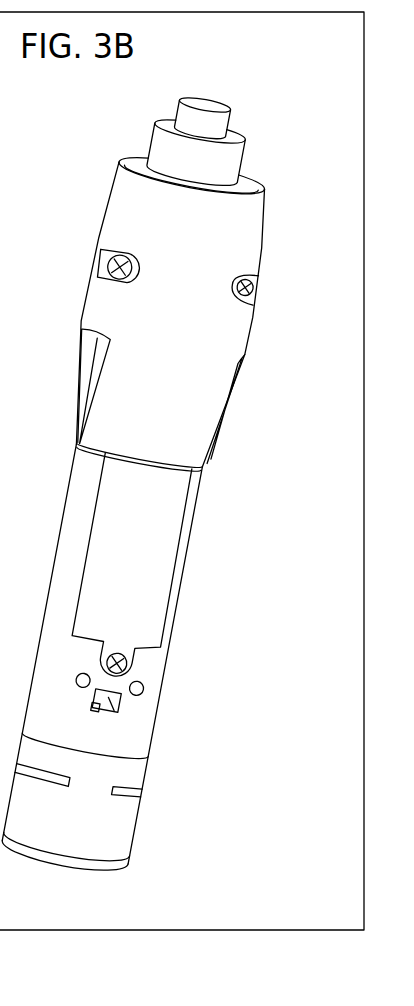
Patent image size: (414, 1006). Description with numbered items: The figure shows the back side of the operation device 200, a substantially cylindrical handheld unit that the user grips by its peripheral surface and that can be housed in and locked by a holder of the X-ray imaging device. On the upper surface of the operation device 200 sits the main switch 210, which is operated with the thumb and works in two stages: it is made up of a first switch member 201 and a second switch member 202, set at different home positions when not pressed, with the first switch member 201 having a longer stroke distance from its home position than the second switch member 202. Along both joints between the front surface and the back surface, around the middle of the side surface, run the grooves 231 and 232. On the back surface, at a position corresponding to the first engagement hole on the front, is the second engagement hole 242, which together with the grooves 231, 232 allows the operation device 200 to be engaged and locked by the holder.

The operation device 200 is at (77, 149).
The first switch member 201 is at (233, 107).
The second switch member 202 is at (247, 157).
The main switch 210 is at (308, 84).
The groove 231 is at (84, 366).
The groove 232 is at (234, 384).
The second engagement hole 242 is at (125, 710).